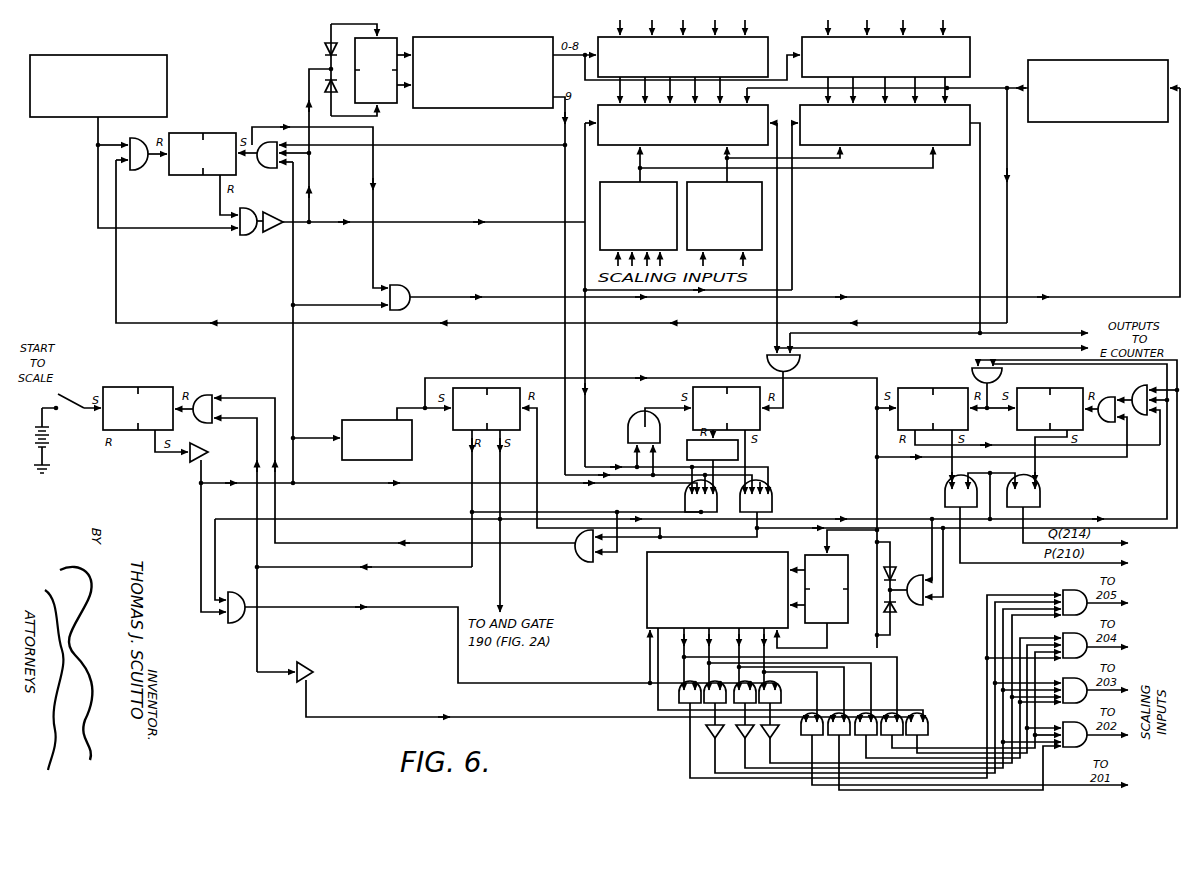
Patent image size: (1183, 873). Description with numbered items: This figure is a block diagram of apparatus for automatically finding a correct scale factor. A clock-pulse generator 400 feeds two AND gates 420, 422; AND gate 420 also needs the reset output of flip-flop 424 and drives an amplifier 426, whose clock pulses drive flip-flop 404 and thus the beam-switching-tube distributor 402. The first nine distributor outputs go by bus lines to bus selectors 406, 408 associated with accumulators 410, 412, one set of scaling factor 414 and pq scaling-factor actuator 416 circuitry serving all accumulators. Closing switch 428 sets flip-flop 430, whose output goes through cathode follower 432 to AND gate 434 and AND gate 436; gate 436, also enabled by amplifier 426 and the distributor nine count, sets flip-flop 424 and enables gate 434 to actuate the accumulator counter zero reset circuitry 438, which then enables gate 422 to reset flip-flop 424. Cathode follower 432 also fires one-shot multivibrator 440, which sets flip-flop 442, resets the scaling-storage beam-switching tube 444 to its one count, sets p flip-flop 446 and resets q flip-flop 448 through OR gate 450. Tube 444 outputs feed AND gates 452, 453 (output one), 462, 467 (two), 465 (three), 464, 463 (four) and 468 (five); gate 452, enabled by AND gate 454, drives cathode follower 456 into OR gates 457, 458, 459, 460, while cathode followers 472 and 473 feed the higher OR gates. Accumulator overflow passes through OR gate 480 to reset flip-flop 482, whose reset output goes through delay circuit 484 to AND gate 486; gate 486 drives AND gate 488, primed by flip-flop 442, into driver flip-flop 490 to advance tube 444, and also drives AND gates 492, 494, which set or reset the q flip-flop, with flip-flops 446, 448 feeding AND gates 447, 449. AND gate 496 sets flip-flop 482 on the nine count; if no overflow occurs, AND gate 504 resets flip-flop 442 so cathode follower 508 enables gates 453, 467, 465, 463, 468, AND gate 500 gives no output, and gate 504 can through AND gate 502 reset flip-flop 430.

The clock-pulse generator 400 is at (93, 56).
The distributor 402 is at (486, 36).
The flip-flop 404 is at (391, 104).
The bus selector 406 is at (604, 36).
The bus selector 408 is at (974, 52).
The accumulator 410 is at (616, 146).
The accumulator 412 is at (955, 146).
The scaling factor 414 is at (651, 182).
The pq scaling-factor actuator 416 is at (762, 196).
The AND gate 420 is at (243, 237).
The AND gate 422 is at (147, 170).
The flip-flop 424 is at (193, 133).
The amplifier 426 is at (275, 234).
The switch 428 is at (74, 409).
The flip-flop 430 is at (146, 387).
The cathode follower 432 is at (209, 452).
The AND gate 434 is at (406, 293).
The AND gate 436 is at (266, 169).
The accumulator counter zero reset circuitry 438 is at (1100, 60).
The one-shot multivibrator 440 is at (362, 413).
The flip-flop 442 is at (460, 432).
The beam-switching tube 444 is at (647, 578).
The p-scale-factor flip-flop 446 is at (921, 382).
The AND gate 447 is at (945, 504).
The q-scale-factor flip-flop 448 is at (1084, 390).
The AND gate 449 is at (1040, 504).
The OR gate 450 is at (1108, 422).
The AND gate 452 is at (781, 700).
The AND gate 453 is at (808, 737).
The AND gate 454 is at (246, 607).
The cathode follower 456 is at (768, 739).
The OR gate 457 is at (1064, 744).
The OR gate 458 is at (1067, 673).
The OR gate 459 is at (1064, 640).
The OR gate 460 is at (1064, 592).
The AND gate 462 is at (742, 680).
The AND gate 463 is at (895, 724).
The AND gate 464 is at (679, 699).
The AND gate 465 is at (869, 737).
The AND gate 467 is at (838, 737).
The AND gate 468 is at (928, 731).
The cathode follower 472 is at (738, 742).
The cathode follower 473 is at (706, 731).
The OR gate 480 is at (800, 364).
The flip-flop 482 is at (760, 420).
The delay circuit 484 is at (695, 446).
The AND gate 486 is at (685, 504).
The AND gate 488 is at (912, 605).
The driver flip-flop 490 is at (813, 553).
The AND gate 492 is at (1002, 375).
The AND gate 494 is at (1140, 386).
The AND gate 496 is at (630, 427).
The AND gate 500 is at (578, 562).
The AND gate 502 is at (213, 396).
The AND gate 504 is at (772, 504).
The cathode follower 508 is at (312, 669).